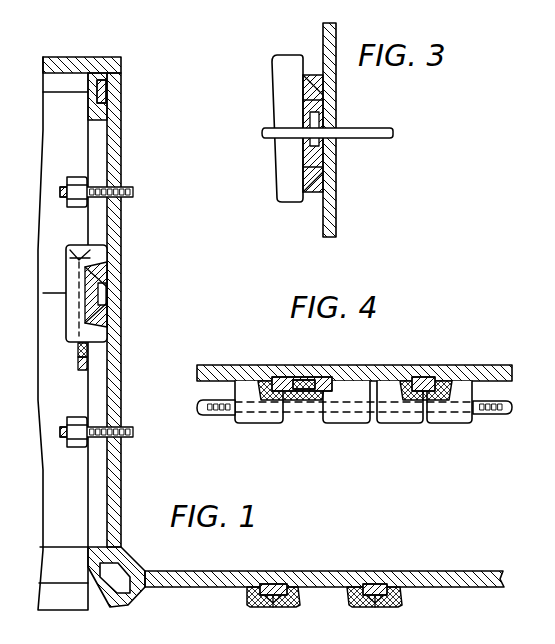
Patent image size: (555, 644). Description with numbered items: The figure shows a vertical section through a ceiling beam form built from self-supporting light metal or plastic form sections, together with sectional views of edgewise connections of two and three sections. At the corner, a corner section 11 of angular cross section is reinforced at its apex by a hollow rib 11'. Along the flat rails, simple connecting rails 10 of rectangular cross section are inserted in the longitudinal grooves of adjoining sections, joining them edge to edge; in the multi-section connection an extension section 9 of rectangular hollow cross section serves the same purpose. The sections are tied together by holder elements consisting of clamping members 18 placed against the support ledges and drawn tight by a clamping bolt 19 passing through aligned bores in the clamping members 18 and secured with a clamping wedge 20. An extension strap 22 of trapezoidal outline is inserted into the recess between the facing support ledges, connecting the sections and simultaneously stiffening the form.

In FIG. 3, the extension section 9 is at (332, 121).
In FIG. 4, the extension section 9 is at (305, 380).
In FIG. 1, the connecting rail 10 is at (278, 583).
In FIG. 4, the connecting rail 10 is at (290, 380).
In FIG. 1, the corner section 11 is at (324, 591).
In FIG. 1, the hollow rib 11' is at (126, 591).
In FIG. 1, the clamping member 18 is at (102, 262).
In FIG. 1, the clamping bolt 19 is at (82, 372).
In FIG. 1, the clamping wedge 20 is at (77, 354).
In FIG. 1, the extension strap 22 is at (100, 224).